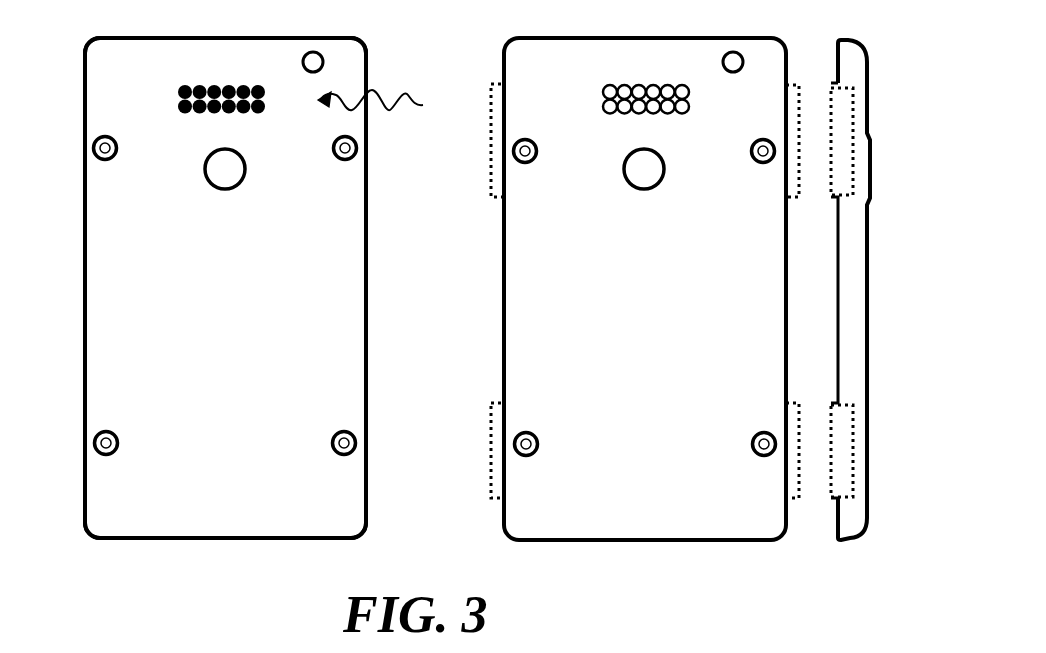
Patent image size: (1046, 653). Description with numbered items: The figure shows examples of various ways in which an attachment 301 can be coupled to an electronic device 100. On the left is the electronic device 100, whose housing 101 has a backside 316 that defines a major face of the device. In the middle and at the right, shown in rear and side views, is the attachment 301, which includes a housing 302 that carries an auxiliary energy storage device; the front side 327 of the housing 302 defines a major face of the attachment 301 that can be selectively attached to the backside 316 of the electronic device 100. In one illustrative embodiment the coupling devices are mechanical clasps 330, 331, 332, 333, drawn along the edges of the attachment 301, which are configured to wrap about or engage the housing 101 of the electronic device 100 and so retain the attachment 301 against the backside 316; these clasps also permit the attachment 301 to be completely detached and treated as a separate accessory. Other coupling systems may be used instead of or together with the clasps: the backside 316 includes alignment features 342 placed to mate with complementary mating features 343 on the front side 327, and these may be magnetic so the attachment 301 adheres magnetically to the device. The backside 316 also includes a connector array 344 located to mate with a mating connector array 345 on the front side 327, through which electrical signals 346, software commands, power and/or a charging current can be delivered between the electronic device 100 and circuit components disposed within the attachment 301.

The electronic device 100 is at (56, 216).
The housing 101 is at (92, 480).
The backside 316 is at (248, 316).
The alignment features 342 is at (118, 150).
The connector array 344 is at (228, 87).
The electrical signals 346 is at (398, 90).
The attachment 301 is at (513, 310).
The housing 302 is at (630, 540).
The front side 327 is at (630, 319).
The mechanical clasp 330 is at (492, 157).
The mechanical clasp 331 is at (497, 443).
The mechanical clasp 332 is at (795, 85).
The mechanical clasp 333 is at (837, 467).
The complementary mating features 343 is at (538, 153).
The mating connector array 345 is at (653, 90).